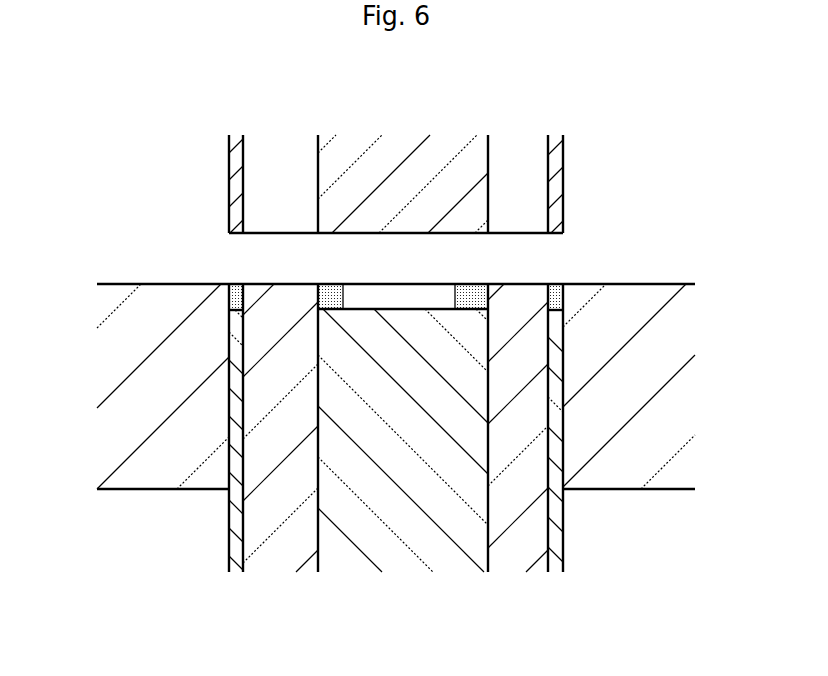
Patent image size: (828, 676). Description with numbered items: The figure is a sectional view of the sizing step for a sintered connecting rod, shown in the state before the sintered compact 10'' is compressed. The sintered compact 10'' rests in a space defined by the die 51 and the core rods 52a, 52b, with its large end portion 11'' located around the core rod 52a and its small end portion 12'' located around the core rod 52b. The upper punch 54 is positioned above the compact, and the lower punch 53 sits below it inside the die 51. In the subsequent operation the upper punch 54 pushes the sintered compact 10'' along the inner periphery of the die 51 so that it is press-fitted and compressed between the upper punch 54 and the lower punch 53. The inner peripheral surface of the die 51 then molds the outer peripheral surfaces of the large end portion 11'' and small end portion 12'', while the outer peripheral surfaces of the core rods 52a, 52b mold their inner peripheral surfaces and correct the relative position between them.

The sintered compact 10'' is at (198, 276).
The large end portion 11'' is at (346, 201).
The small end portion 12'' is at (473, 201).
The die 51 is at (120, 360).
The core rod 52a is at (283, 540).
The core rod 52b is at (519, 540).
The lower punch 53 is at (222, 521).
The upper punch 54 is at (222, 190).